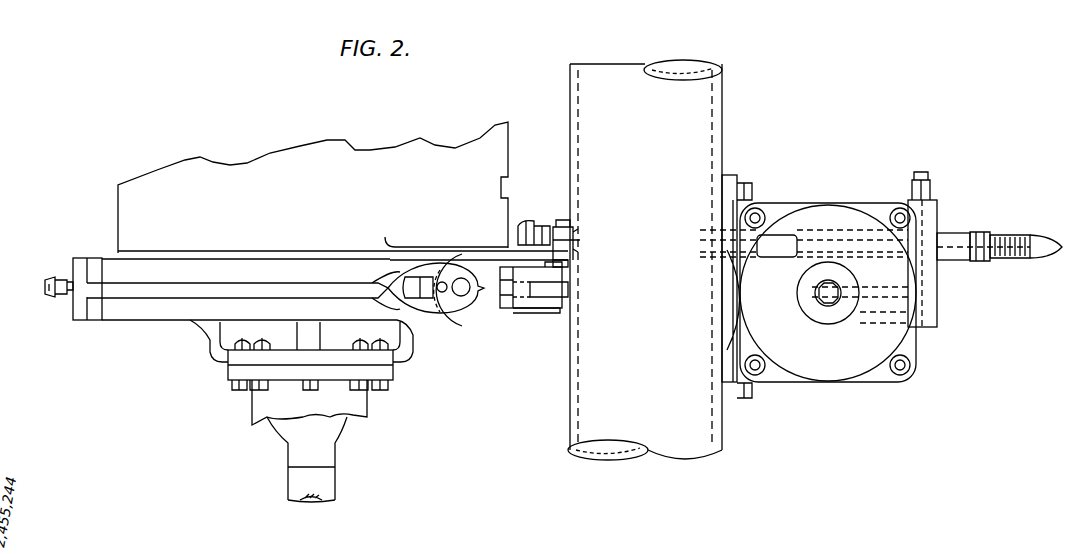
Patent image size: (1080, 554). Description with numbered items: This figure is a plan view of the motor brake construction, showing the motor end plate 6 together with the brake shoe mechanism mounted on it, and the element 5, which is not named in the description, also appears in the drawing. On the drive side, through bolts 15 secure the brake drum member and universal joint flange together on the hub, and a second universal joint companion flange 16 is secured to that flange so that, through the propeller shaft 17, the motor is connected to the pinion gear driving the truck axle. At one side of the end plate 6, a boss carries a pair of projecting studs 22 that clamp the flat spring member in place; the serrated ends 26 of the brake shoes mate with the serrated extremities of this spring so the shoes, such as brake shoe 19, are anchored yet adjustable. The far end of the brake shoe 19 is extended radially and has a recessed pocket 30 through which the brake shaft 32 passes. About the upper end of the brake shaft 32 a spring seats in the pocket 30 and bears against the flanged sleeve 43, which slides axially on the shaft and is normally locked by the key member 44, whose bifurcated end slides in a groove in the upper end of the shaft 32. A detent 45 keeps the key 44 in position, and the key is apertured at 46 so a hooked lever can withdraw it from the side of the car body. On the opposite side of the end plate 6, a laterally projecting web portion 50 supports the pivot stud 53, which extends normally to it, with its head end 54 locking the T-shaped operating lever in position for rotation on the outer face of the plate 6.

The pipe 5 is at (706, 93).
The end plate 6 is at (116, 252).
The through bolts 15 is at (260, 386).
The second universal joint companion flange 16 is at (328, 457).
The propeller shaft 17 is at (334, 487).
The brake shoe 19 is at (240, 298).
The projecting studs 22 is at (55, 296).
The ends of brake shoes 26 is at (92, 262).
The recessed pocket 30 is at (442, 268).
The brake shaft 32 is at (423, 300).
The flanged sleeve 43 is at (407, 299).
The key member 44 is at (430, 300).
The detent 45 is at (442, 283).
The aperture 46 is at (465, 297).
The laterally projecting web portion 50 is at (460, 270).
The pivot stud 53 is at (537, 224).
The head end 54 is at (535, 312).